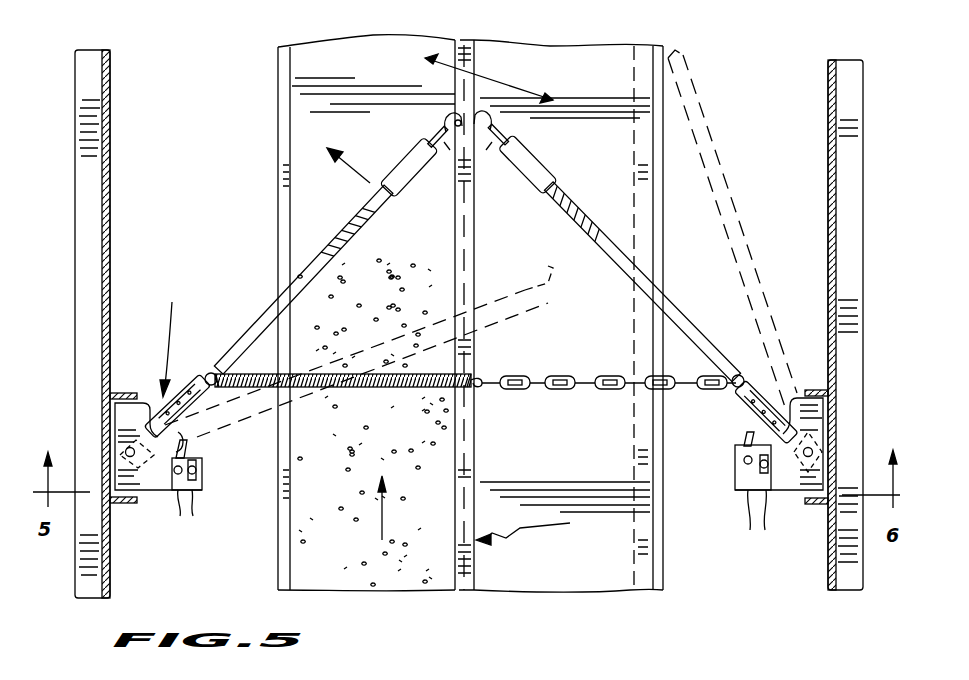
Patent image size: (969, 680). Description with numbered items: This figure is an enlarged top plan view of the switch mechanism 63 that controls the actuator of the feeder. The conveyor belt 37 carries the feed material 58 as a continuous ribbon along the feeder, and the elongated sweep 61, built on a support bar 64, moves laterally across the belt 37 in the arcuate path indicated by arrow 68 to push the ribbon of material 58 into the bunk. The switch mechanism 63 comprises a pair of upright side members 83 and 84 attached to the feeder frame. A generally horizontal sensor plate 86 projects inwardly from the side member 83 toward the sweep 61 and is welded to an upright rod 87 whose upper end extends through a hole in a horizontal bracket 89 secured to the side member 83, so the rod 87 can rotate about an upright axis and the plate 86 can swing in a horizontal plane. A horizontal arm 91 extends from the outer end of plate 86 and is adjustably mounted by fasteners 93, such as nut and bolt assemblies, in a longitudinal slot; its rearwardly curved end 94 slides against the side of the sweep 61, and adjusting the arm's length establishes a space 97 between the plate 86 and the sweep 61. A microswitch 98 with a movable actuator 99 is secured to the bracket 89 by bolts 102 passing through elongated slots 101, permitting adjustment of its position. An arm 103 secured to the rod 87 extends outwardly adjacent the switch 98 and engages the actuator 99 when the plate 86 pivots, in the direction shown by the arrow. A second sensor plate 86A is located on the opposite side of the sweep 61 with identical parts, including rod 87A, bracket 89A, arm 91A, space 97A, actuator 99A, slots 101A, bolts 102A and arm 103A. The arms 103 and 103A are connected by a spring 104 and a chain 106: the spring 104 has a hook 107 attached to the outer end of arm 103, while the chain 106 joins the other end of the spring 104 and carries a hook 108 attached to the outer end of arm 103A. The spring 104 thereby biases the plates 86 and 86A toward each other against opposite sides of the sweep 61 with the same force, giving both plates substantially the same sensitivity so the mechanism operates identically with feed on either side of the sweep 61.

The belt 37 is at (612, 582).
The material 58 is at (378, 578).
The sweep 61 is at (536, 529).
The switch mechanism 63 is at (160, 339).
The bar 64 is at (466, 592).
The arrow 68 is at (500, 78).
The side member 83 is at (120, 390).
The side member 84 is at (828, 392).
The plate 86 is at (325, 285).
The sensor plate 86A is at (606, 230).
The rod 87 is at (135, 458).
The rod 87A is at (814, 450).
The bracket 89 is at (110, 432).
The bracket 89A is at (826, 402).
The arm 91 is at (440, 132).
The arm 91A is at (497, 136).
The fasteners 93 is at (422, 172).
The curved end 94 is at (445, 118).
The space 97 is at (450, 152).
The space 97A is at (494, 152).
The microswitch 98 is at (204, 466).
The actuator 99 is at (188, 445).
The actuator 99A is at (742, 440).
The slots 101 is at (201, 512).
The slots 101A is at (770, 505).
The bolts 102 is at (204, 462).
The bolts 102A is at (738, 460).
The arm 103 is at (214, 372).
The arm 103A is at (762, 416).
The spring 104 is at (430, 397).
The chain 106 is at (552, 386).
The hook 107 is at (204, 372).
The hook 108 is at (741, 374).